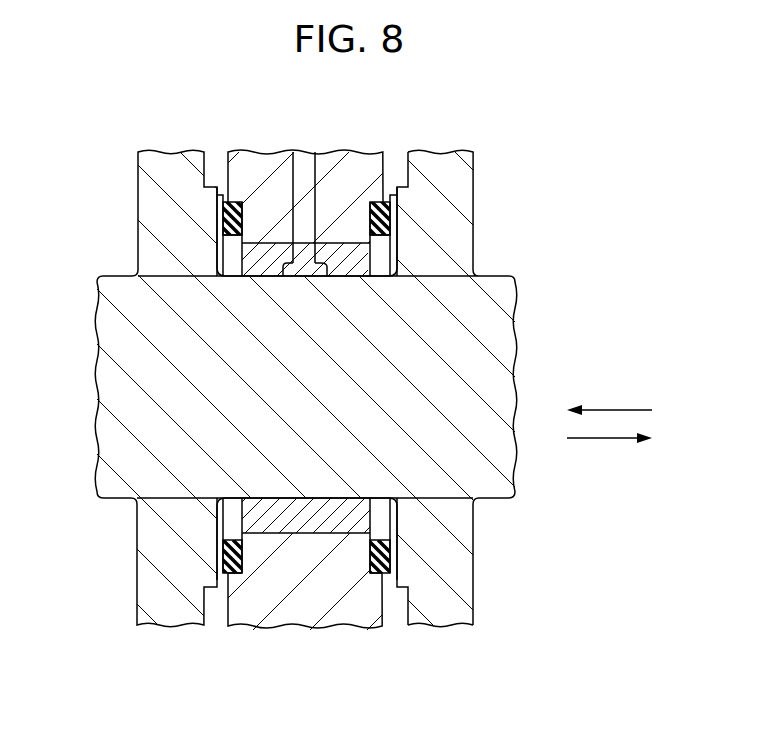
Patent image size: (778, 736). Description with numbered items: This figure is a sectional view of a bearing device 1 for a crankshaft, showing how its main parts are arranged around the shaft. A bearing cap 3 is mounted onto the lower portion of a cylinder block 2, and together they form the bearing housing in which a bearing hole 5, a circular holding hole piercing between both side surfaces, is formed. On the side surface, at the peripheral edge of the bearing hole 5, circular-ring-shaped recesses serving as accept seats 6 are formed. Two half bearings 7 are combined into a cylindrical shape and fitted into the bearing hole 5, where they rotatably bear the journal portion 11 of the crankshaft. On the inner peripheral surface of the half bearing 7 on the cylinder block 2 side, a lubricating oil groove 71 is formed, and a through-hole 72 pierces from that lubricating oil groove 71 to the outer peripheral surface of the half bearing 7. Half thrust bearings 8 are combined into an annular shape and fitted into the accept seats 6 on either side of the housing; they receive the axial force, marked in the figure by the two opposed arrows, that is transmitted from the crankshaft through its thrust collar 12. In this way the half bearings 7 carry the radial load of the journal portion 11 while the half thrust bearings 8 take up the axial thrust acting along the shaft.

The bearing device 1 is at (536, 176).
The cylinder block 2 is at (262, 158).
The bearing cap 3 is at (290, 622).
The bearing hole 5 is at (266, 283).
The accept seat 6 is at (395, 218).
The half bearing 7 is at (398, 260).
The half thrust bearing 8 is at (235, 243).
The journal portion 11 is at (250, 425).
The thrust collar 12 is at (205, 187).
The lubricating oil groove 71 is at (305, 272).
The through-hole 72 is at (305, 240).